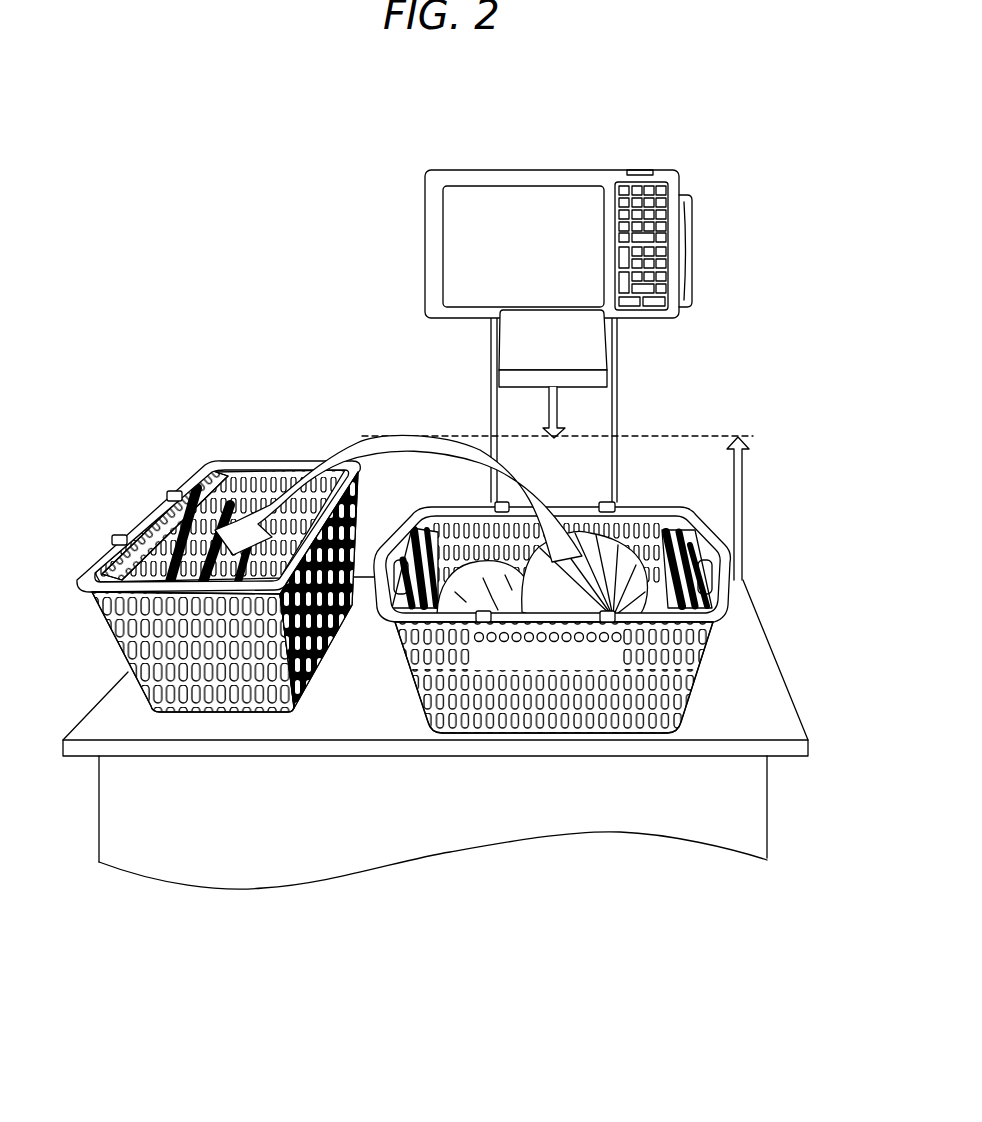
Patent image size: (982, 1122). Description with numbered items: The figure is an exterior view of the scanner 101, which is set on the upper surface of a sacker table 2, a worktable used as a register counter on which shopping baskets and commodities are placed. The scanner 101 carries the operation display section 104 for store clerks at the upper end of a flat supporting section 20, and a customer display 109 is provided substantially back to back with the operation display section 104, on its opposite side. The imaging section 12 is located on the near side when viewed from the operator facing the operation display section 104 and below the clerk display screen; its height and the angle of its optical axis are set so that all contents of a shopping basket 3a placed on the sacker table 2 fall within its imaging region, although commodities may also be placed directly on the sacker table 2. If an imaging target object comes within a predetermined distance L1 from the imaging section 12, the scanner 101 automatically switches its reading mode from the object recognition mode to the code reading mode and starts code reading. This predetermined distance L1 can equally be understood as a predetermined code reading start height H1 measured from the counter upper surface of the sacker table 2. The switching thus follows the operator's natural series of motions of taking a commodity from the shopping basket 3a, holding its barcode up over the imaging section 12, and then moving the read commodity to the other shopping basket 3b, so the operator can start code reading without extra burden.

The scanner 101 is at (597, 287).
The operation display section 104 is at (658, 170).
The customer display 109 is at (692, 250).
The imaging section 12 is at (567, 334).
The flat supporting section 20 is at (617, 362).
The sacker table 2 is at (755, 663).
The shopping basket 3a is at (638, 734).
The shopping basket 3b is at (157, 515).
The predetermined distance L1 is at (465, 387).
The predetermined height H1 is at (755, 437).